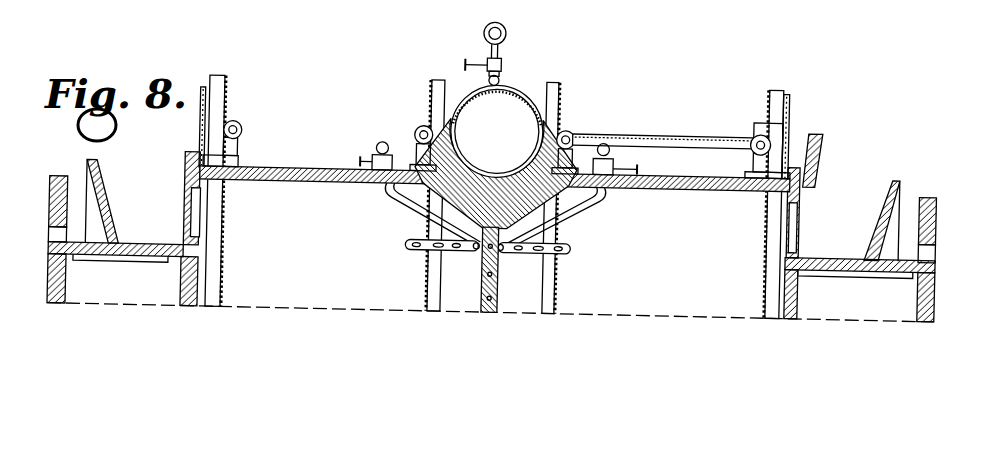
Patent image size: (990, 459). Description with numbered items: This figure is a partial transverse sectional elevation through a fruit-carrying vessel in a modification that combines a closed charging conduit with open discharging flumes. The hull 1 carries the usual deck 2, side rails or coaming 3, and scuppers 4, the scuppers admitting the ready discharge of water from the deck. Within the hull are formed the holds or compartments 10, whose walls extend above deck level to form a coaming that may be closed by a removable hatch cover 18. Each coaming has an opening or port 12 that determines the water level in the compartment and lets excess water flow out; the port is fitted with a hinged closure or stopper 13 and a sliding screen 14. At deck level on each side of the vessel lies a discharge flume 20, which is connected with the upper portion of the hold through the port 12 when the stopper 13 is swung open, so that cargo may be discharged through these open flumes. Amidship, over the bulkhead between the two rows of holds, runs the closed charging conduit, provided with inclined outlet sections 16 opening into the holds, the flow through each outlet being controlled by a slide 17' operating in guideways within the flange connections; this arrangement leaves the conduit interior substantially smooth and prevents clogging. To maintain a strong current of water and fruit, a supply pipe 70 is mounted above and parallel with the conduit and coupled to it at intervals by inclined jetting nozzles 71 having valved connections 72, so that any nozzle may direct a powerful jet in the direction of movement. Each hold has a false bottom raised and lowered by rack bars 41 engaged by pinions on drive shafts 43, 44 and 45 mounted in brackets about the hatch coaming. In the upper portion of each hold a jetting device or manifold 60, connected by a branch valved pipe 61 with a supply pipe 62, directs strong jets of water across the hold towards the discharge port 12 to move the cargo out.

The hull 1 is at (937, 276).
The deck 2 is at (142, 257).
The side rails or coaming 3 is at (50, 198).
The scuppers 4 is at (50, 241).
The holds or compartments 10 is at (476, 281).
The opening or port 12 is at (202, 209).
The hinged closure or stopper 13 is at (184, 213).
The sliding screen 14 is at (198, 131).
The lateral openings 16 is at (495, 216).
The slide 17' is at (497, 131).
The removable hatch cover 18 is at (722, 180).
The discharge flumes 20 is at (102, 192).
The rack bars 41 is at (430, 86).
The drive shaft 43 is at (241, 124).
The drive shaft 44 is at (672, 127).
The drive shaft 45 is at (416, 127).
The jetting device or manifold 60 is at (410, 248).
The branch valved pipe 61 is at (400, 200).
The supply pipe 62 is at (372, 140).
The supply pipe 70 is at (504, 31).
The inclined jetting nozzles 71 is at (498, 76).
The valved connections 72 is at (500, 58).